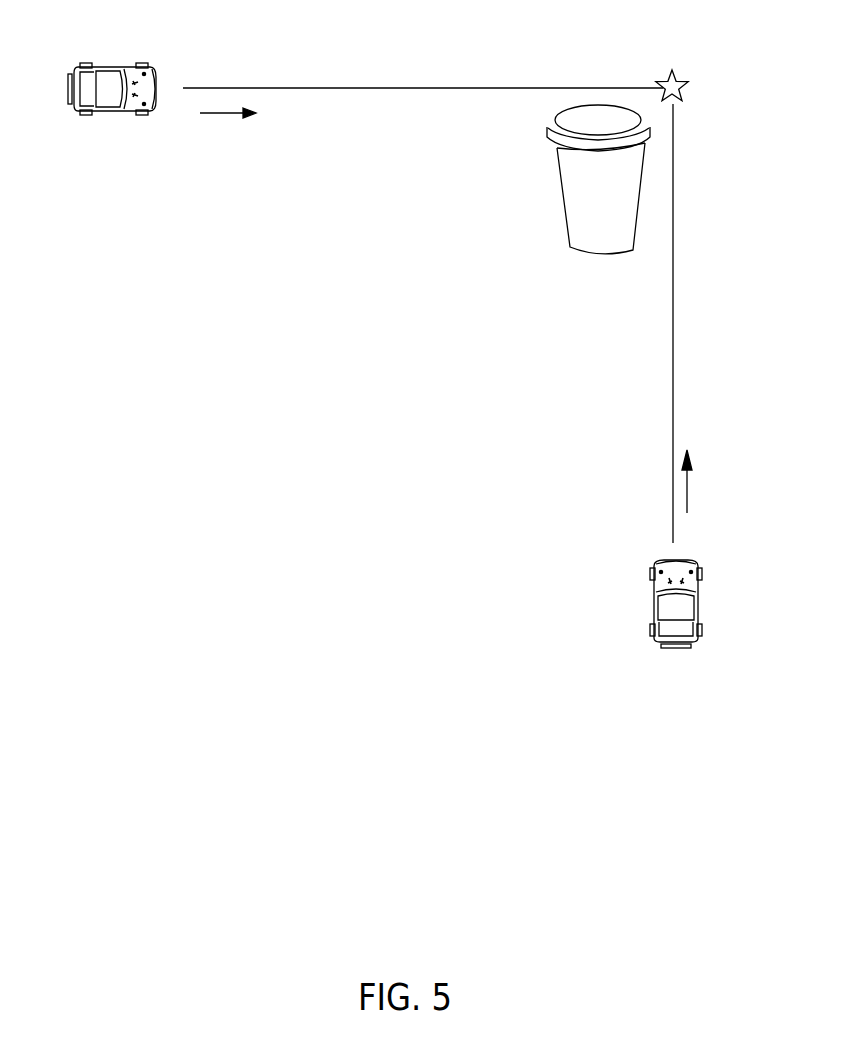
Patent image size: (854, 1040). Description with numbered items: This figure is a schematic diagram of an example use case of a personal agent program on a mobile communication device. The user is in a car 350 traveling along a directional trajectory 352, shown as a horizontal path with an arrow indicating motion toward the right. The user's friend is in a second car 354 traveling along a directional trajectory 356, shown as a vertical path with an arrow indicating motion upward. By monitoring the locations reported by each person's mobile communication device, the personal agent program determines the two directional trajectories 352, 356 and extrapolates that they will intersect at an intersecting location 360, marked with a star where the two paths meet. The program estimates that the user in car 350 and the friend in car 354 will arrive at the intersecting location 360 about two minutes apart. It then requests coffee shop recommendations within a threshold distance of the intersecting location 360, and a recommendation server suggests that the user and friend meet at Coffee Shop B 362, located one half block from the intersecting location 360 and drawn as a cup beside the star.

The car 350 is at (118, 114).
The directional trajectory 352 is at (410, 88).
The car 354 is at (652, 598).
The directional trajectory 356 is at (673, 340).
The intersecting location 360 is at (664, 76).
The Coffee Shop B 362 is at (560, 178).